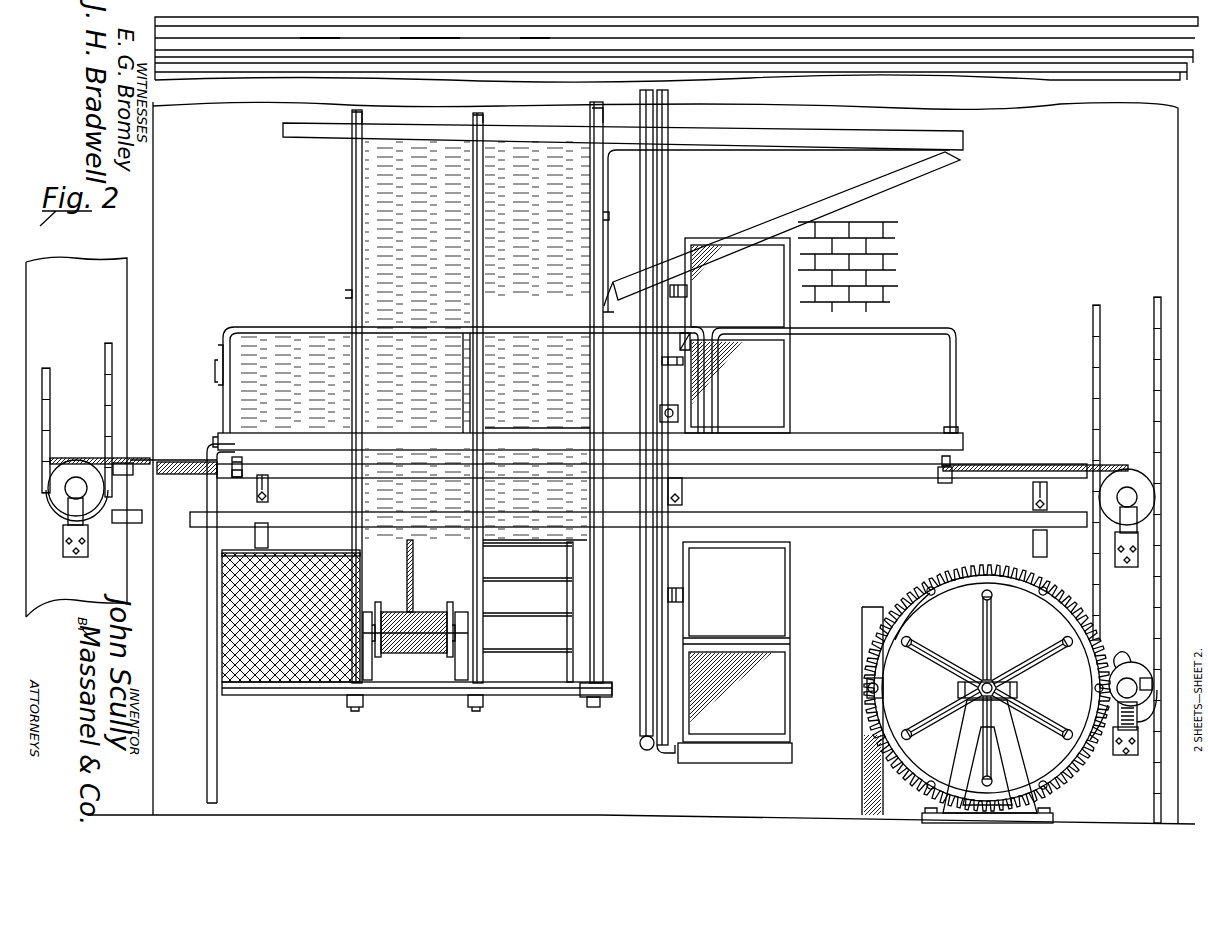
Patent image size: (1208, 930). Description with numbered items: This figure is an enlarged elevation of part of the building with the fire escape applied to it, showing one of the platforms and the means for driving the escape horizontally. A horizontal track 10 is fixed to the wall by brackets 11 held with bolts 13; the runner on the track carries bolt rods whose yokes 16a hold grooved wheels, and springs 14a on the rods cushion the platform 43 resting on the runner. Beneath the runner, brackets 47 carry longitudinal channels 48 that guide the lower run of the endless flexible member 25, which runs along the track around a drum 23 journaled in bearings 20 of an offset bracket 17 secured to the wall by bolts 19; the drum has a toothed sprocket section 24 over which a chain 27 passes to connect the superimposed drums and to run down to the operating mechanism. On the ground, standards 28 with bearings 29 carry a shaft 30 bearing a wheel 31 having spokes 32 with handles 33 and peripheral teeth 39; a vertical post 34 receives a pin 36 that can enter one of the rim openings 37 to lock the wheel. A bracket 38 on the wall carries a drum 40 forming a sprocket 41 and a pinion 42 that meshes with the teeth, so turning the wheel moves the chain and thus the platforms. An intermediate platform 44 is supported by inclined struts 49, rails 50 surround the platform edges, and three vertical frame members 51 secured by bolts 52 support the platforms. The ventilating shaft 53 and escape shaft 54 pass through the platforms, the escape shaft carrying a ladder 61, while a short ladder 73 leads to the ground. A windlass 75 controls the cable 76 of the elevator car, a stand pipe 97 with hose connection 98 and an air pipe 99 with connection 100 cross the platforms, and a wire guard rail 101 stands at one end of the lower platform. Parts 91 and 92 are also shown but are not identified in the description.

The horizontal track 10 is at (847, 474).
The bracket 11 is at (257, 492).
The bolt 13 is at (268, 495).
The spring 14a is at (241, 456).
The yoke 16a is at (242, 462).
The offset bracket 17 is at (68, 520).
The screw or bolt 19 is at (76, 557).
The bearing 20 is at (78, 481).
The drum 23 is at (56, 478).
The sprocket section 24 is at (50, 461).
The endless flexible member 25 is at (183, 462).
The chain 27 is at (105, 362).
The standard 28 is at (1013, 759).
The bearing 29 is at (990, 681).
The shaft 30 is at (1017, 688).
The wheel 31 is at (1025, 586).
The spoke 32 is at (996, 615).
The handle 33 is at (1070, 649).
The vertical post 34 is at (872, 622).
The pin or bolt 36 is at (862, 688).
The opening 37 is at (935, 596).
The bracket 38 is at (1137, 718).
The peripheral teeth 39 is at (940, 573).
The drum 40 is at (1142, 672).
The sprocket 41 is at (1123, 663).
The pinion 42 is at (1152, 682).
The platform 43 is at (963, 445).
The intermediate platform 44 is at (963, 141).
The bracket 47 is at (862, 526).
The longitudinal channel 48 is at (268, 540).
The strut 49 is at (873, 188).
The rail 50 is at (910, 333).
The vertical frame member 51 is at (357, 245).
The bolt 52 is at (355, 707).
The ventilating shaft 53 is at (360, 357).
The escape shaft 54 is at (577, 366).
The ladder 61 is at (566, 652).
The short ladder 73 is at (207, 698).
The windlass 75 is at (428, 652).
The line or cable 76 is at (413, 588).
The bracket 91 is at (662, 398).
The bracket 92 is at (690, 338).
The stand pipe 97 is at (645, 600).
The connection 98 is at (660, 417).
The air pipe 99 is at (682, 488).
The connection 100 is at (688, 292).
The guard rail 101 is at (305, 675).